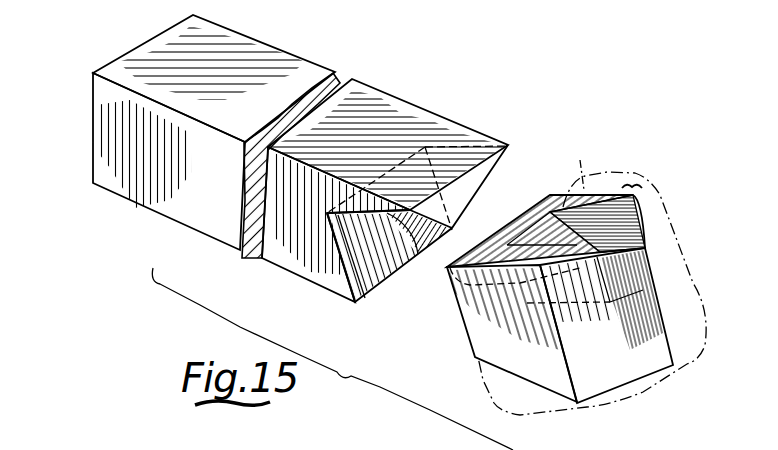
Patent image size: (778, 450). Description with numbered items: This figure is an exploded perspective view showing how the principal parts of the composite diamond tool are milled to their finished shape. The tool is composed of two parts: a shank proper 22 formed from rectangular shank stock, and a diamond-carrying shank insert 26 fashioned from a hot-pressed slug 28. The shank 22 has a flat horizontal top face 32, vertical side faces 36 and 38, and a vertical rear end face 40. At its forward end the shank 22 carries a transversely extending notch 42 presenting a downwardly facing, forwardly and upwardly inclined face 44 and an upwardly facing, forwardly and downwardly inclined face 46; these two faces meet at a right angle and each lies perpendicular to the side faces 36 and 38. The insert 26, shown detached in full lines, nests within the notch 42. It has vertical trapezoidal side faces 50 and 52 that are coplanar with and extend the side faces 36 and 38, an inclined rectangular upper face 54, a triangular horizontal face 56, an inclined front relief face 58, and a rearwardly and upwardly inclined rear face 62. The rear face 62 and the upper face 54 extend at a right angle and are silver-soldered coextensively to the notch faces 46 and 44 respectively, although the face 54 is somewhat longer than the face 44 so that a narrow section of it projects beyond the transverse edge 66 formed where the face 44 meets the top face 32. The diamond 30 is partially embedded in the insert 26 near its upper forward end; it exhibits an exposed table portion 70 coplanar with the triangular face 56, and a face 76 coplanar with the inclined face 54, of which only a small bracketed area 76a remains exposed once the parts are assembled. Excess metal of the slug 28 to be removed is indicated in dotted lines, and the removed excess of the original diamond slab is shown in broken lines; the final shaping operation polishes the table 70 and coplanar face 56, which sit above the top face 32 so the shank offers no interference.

The shank proper 22 is at (302, 76).
The diamond-carrying shank insert 26 is at (440, 320).
The hot-pressed slug 28 is at (688, 362).
The diamond 30 is at (625, 232).
The top face of the shank 32 is at (402, 118).
The side face of the shank 36 is at (183, 207).
The side face of the shank 38 is at (338, 80).
The rear end face 40 is at (93, 118).
The notch 42 is at (388, 217).
The inclined face of the notch 44 is at (360, 233).
The inclined face of the notch 46 is at (355, 270).
The side face of the insert 50 is at (503, 352).
The side face of the insert 52 is at (640, 275).
The inclined upper face of the insert 54 is at (563, 207).
The triangular horizontal face 56 is at (625, 217).
The front face of the insert 58 is at (610, 377).
The rear face of the insert 62 is at (464, 330).
The transverse edge 66 is at (484, 165).
The table portion of the diamond 70 is at (607, 246).
The face of the diamond 76 is at (585, 220).
The exposed area of the diamond face 76a is at (637, 180).